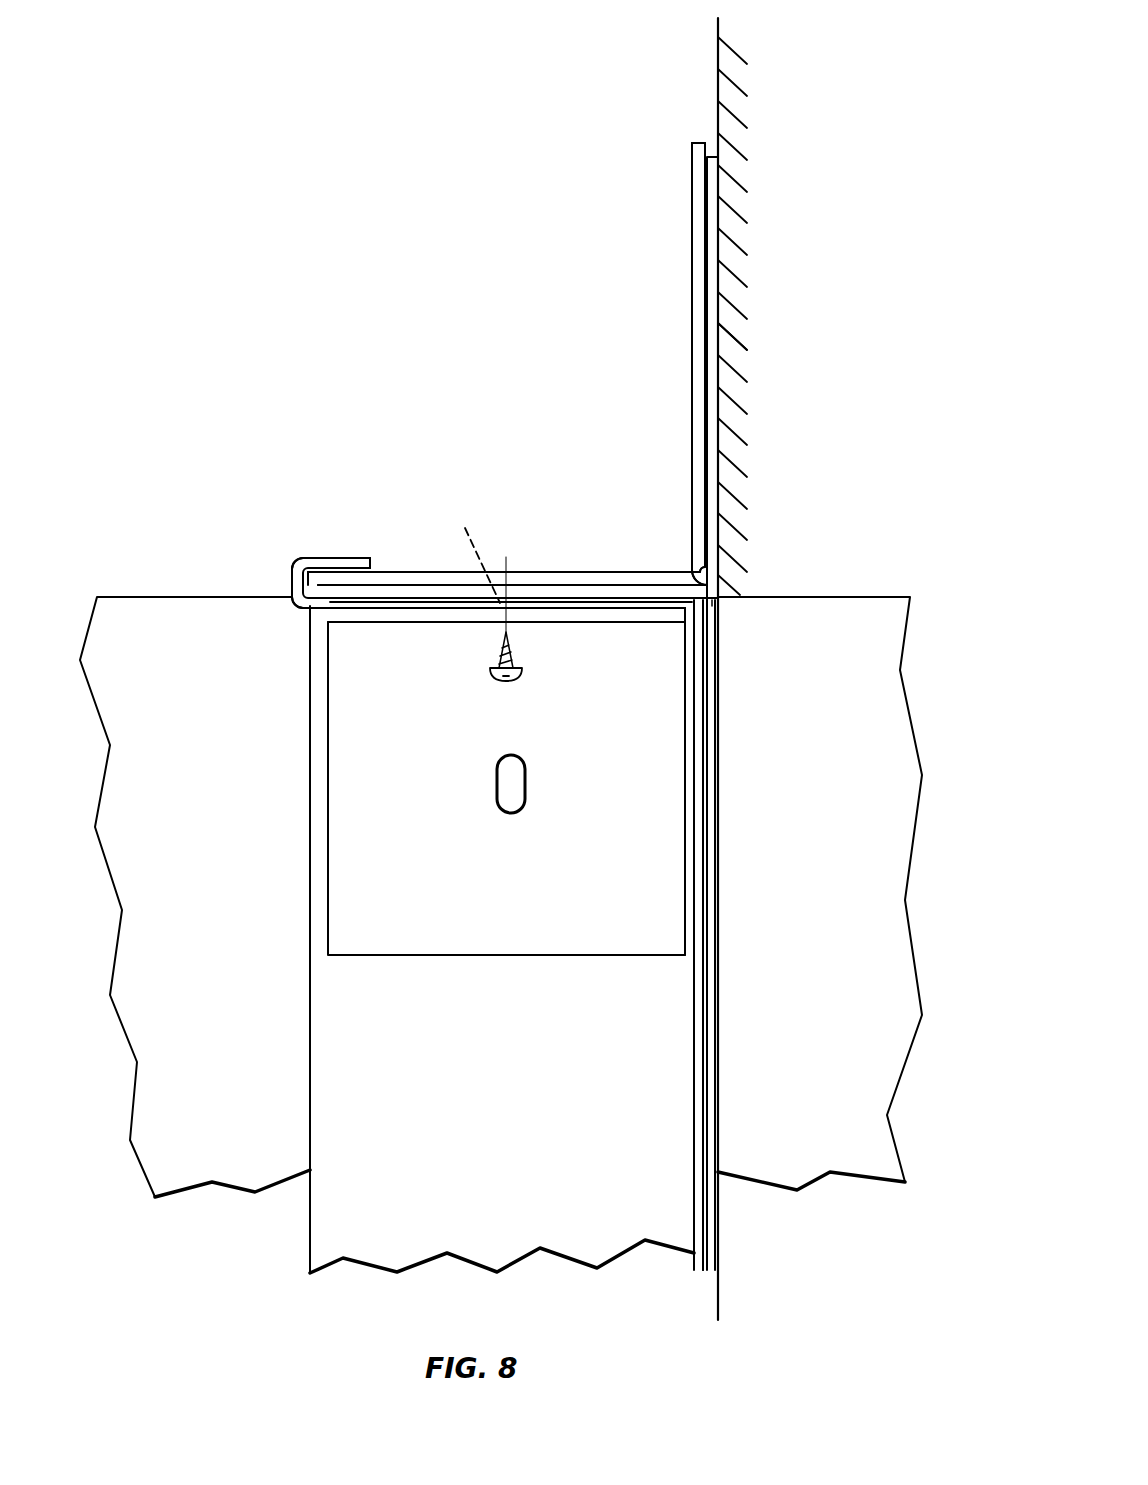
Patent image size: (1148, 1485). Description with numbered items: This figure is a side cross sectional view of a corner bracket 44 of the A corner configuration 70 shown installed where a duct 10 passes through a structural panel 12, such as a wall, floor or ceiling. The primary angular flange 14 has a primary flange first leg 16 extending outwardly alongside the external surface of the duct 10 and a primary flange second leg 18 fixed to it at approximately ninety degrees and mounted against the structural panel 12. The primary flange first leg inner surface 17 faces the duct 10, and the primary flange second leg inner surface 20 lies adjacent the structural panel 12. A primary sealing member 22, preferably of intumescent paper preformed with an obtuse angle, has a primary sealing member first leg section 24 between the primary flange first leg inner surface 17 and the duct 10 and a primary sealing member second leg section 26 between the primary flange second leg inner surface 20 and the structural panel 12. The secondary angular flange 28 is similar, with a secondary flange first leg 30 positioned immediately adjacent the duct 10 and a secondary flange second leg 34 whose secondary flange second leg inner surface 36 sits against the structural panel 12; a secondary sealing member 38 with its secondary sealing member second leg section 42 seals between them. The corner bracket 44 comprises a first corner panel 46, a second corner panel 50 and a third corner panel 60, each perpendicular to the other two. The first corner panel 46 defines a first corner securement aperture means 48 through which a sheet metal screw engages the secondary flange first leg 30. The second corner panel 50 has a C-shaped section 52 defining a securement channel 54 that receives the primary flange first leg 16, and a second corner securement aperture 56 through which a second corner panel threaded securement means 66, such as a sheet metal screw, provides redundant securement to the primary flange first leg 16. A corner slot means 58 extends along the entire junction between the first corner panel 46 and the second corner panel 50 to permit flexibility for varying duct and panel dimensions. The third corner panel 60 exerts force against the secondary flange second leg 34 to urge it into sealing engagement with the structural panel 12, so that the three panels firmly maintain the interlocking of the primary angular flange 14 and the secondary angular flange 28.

The duct 10 is at (244, 1042).
The structural panel 12 is at (718, 46).
The primary angular flange 14 is at (692, 165).
The primary flange first leg 16 is at (536, 577).
The primary flange first leg inner surface 17 is at (609, 585).
The primary flange second leg 18 is at (697, 248).
The primary flange second leg inner surface 20 is at (708, 205).
The primary sealing member 22 is at (720, 604).
The primary sealing member first leg section 24 is at (410, 600).
The primary sealing member second leg section 26 is at (712, 320).
The secondary angular flange 28 is at (327, 1225).
The secondary flange first leg 30 is at (508, 1107).
The secondary flange second leg 34 is at (706, 993).
The secondary flange second leg inner surface 36 is at (698, 793).
The secondary sealing member 38 is at (712, 665).
The secondary sealing member second leg section 42 is at (715, 1052).
The corner bracket 44 is at (420, 908).
The first corner panel 46 is at (592, 814).
The first corner securement aperture means 48 is at (497, 773).
The second corner panel 50 is at (325, 606).
The C-shaped section 52 is at (308, 558).
The securement channel 54 is at (370, 558).
The second corner securement aperture 56 is at (476, 547).
The corner slot means 58 is at (362, 622).
The third corner panel 60 is at (683, 843).
The second corner panel threaded securement means 66 is at (518, 678).
The corner configuration A 70 is at (660, 740).